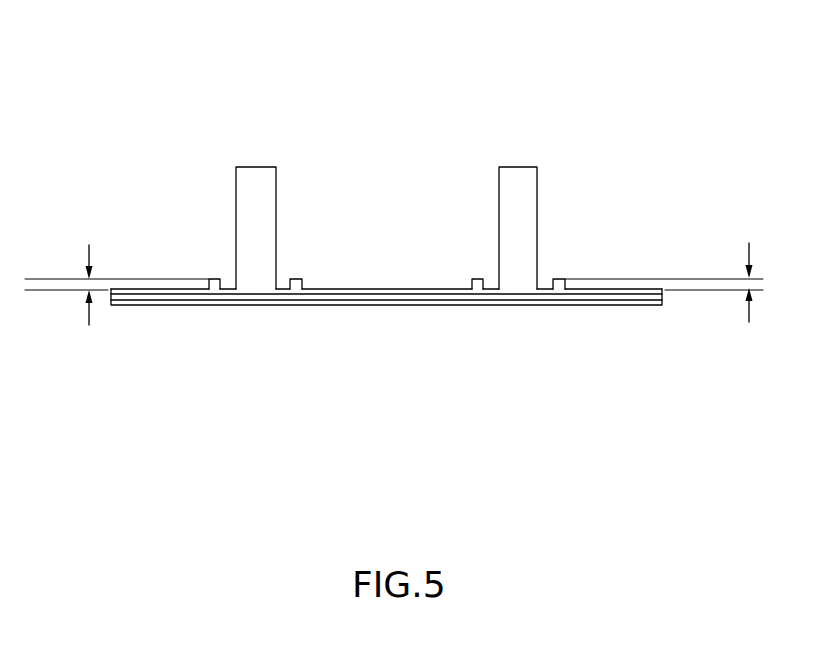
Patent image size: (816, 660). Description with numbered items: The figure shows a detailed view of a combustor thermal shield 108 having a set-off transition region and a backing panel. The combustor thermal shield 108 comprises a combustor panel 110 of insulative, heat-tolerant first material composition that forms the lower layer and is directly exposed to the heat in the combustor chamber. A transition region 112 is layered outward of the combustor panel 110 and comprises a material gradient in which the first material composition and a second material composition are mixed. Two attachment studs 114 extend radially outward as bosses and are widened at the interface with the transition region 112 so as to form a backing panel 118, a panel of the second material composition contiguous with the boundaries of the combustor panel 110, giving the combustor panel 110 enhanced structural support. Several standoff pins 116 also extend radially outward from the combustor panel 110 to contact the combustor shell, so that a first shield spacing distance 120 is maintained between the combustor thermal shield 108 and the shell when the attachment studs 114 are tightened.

The combustor thermal shield 108 is at (304, 90).
The combustor panel 110 is at (117, 306).
The transition region 112 is at (657, 301).
The attachment stud 114 is at (247, 182).
The standoff pin 116 is at (213, 279).
The backing panel 118 is at (615, 288).
The first shield spacing distance 120 is at (89, 318).